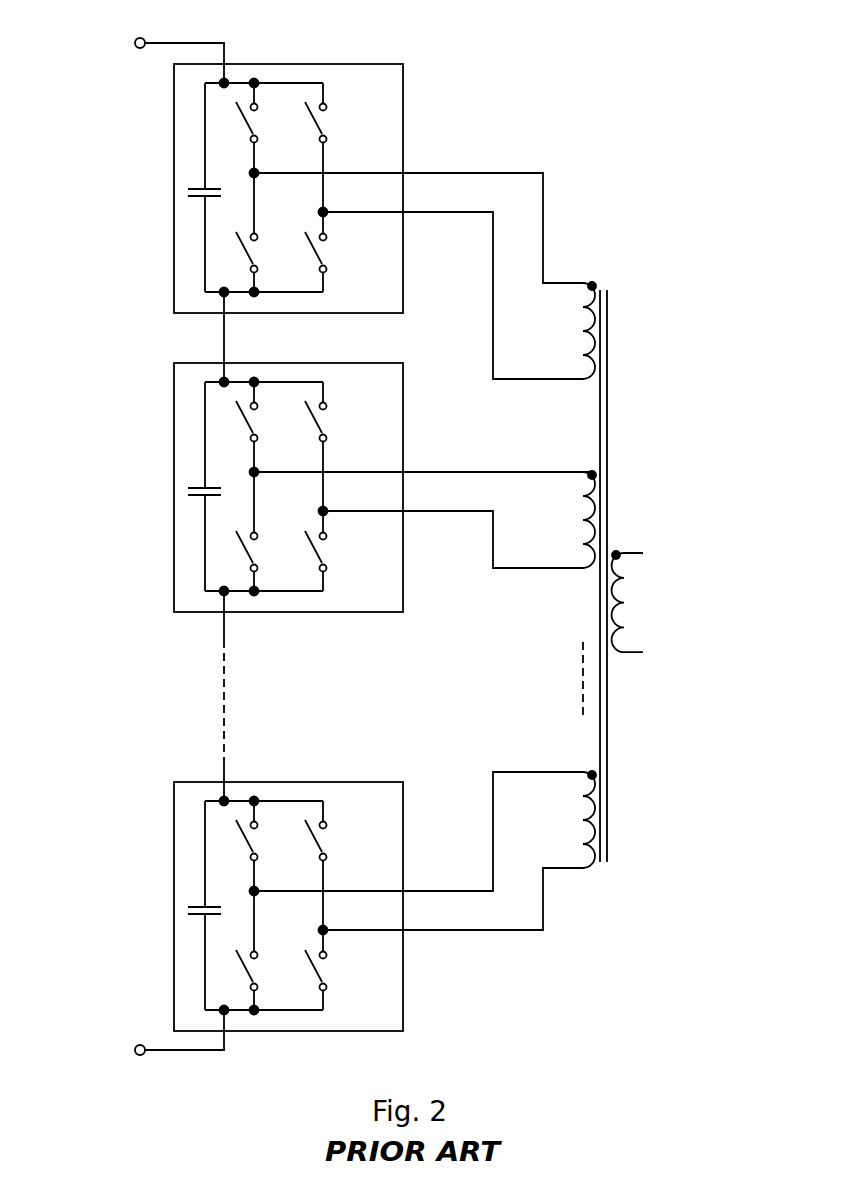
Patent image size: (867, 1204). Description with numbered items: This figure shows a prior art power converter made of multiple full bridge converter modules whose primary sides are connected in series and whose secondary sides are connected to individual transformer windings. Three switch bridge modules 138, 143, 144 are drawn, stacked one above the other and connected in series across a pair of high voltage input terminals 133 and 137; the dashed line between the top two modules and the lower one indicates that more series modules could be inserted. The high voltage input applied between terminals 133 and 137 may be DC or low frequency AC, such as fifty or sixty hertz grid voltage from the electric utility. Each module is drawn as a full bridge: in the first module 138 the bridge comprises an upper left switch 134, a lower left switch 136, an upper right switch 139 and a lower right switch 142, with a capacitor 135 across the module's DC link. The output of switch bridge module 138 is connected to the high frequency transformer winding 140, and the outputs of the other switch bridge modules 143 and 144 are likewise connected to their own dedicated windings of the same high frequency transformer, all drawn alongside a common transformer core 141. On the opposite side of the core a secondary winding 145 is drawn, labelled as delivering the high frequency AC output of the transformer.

The high voltage input terminal 133 is at (158, 50).
The upper left switch of first full-bridge cell 134 is at (234, 117).
The DC link capacitor of first cell 135 is at (195, 203).
The lower left switch of first full-bridge cell 136 is at (234, 253).
The high voltage input terminal 137 is at (158, 1042).
The switch bridge module 138 is at (280, 189).
The upper right switch of first full-bridge cell 139 is at (333, 123).
The HF transformer winding 140 is at (573, 310).
The transformer core 141 is at (613, 380).
The lower right switch of first full-bridge cell 142 is at (333, 267).
The switch bridge module 143 is at (302, 622).
The switch bridge module 144 is at (320, 771).
The secondary winding providing HF AC output 145 is at (643, 622).